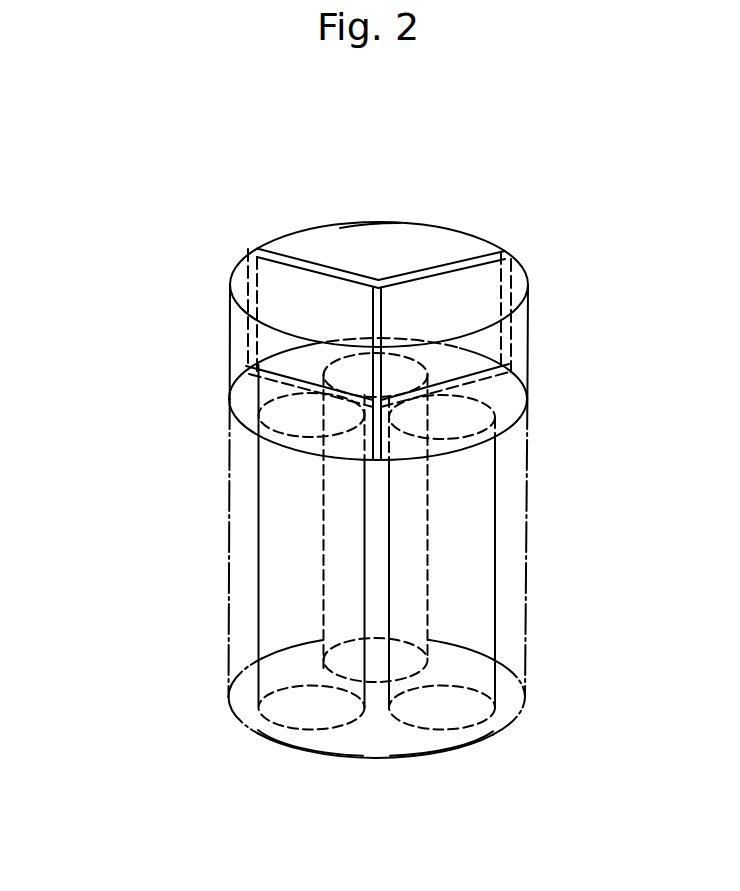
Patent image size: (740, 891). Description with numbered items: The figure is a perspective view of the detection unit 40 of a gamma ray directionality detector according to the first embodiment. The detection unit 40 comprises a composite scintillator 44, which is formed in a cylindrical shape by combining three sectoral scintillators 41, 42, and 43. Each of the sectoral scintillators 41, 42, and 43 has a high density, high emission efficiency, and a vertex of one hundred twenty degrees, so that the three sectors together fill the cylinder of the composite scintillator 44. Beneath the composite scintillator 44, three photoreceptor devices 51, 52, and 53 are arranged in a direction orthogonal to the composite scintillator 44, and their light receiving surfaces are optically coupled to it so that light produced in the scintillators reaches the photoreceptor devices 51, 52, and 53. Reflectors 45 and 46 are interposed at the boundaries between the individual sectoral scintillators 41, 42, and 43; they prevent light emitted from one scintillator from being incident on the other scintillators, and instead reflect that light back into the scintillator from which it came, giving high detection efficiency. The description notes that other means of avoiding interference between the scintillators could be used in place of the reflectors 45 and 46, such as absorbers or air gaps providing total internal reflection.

The detection unit 40 is at (224, 478).
The sectoral scintillator 41 is at (527, 322).
The sectoral scintillator 42 is at (438, 223).
The sectoral scintillator 43 is at (232, 318).
The composite scintillator 44 is at (374, 215).
The reflector 45 is at (507, 256).
The reflector 46 is at (373, 307).
The photoreceptor device 51 is at (495, 547).
The photoreceptor device 52 is at (377, 684).
The photoreceptor device 53 is at (259, 575).